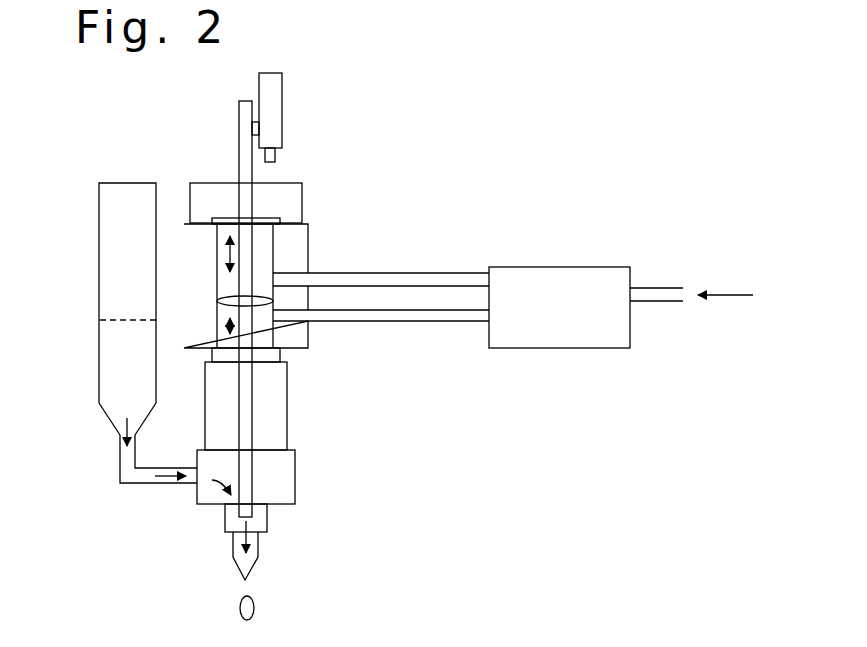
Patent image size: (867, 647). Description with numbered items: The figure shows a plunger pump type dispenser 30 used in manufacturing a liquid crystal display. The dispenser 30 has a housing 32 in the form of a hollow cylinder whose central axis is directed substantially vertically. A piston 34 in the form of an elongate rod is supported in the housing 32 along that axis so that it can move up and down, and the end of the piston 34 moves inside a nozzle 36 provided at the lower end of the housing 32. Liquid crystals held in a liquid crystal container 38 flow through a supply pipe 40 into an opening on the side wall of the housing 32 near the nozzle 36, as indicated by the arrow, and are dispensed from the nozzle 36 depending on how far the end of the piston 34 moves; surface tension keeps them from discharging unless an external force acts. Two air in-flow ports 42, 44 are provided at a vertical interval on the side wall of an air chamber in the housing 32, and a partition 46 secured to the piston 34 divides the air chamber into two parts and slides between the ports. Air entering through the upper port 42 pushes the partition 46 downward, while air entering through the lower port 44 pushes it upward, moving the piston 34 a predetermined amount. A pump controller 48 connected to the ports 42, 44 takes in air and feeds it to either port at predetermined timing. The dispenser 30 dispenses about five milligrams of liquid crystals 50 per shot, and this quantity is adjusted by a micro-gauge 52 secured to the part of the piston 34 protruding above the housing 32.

The dispenser 30 is at (333, 365).
The housing 32 is at (287, 422).
The piston 34 is at (239, 131).
The nozzle 36 is at (258, 552).
The liquid crystal container 38 is at (106, 258).
The supply pipe 40 is at (170, 483).
The air in-flow port 42 is at (405, 272).
The air in-flow port 44 is at (418, 322).
The partition 46 is at (223, 305).
The pump controller 48 is at (560, 266).
The liquid crystals 50 is at (254, 608).
The micro-gauge 52 is at (282, 107).